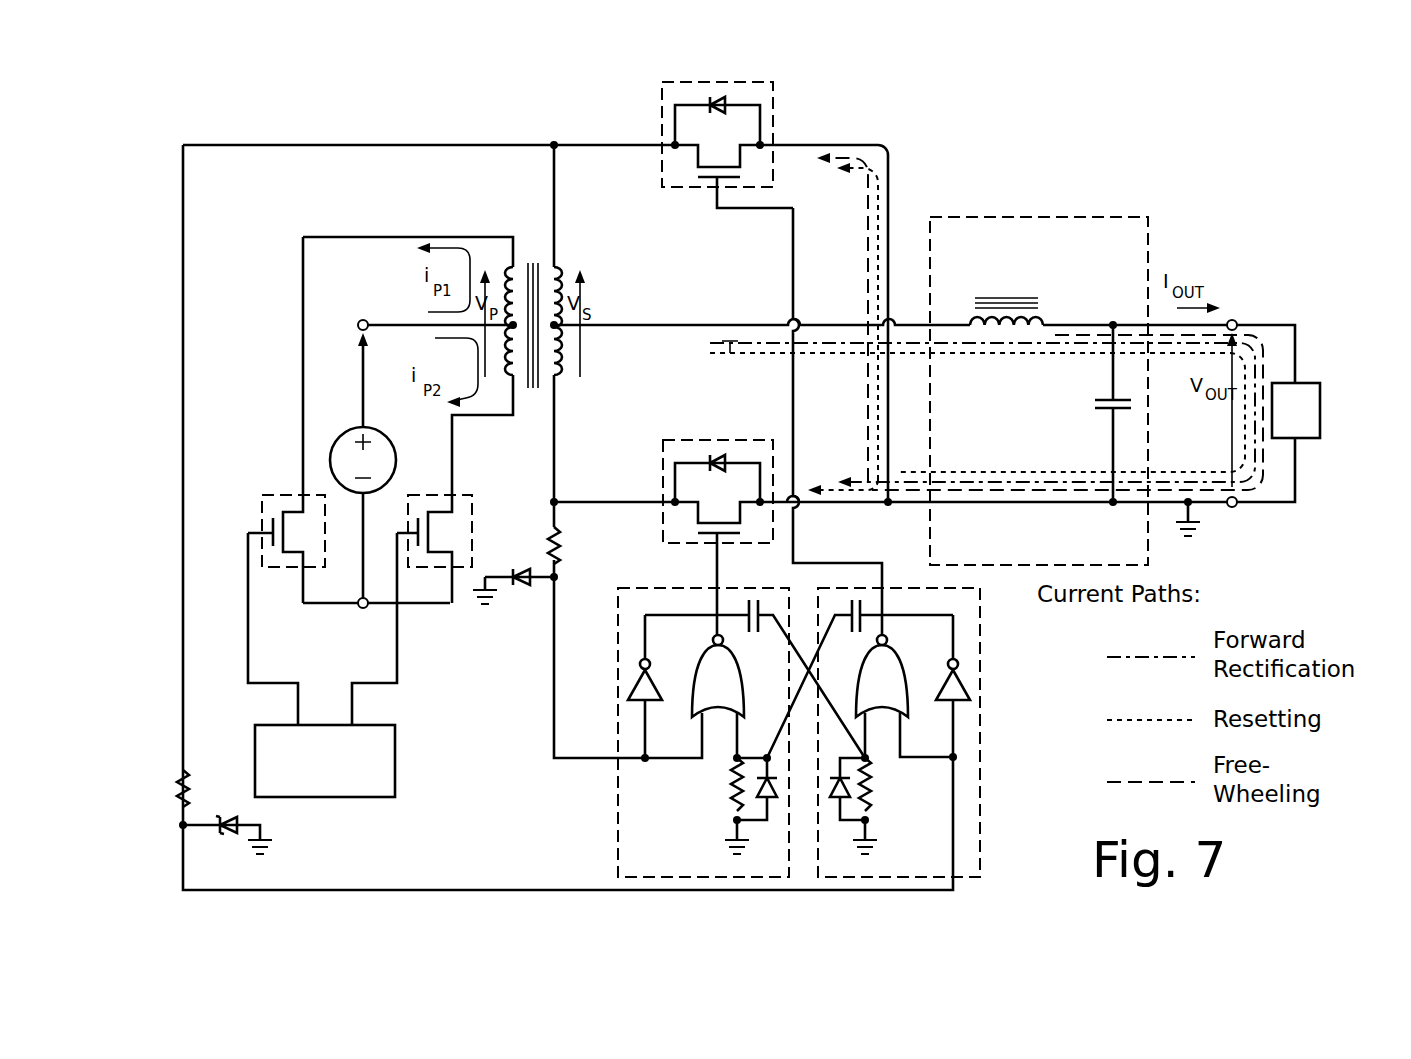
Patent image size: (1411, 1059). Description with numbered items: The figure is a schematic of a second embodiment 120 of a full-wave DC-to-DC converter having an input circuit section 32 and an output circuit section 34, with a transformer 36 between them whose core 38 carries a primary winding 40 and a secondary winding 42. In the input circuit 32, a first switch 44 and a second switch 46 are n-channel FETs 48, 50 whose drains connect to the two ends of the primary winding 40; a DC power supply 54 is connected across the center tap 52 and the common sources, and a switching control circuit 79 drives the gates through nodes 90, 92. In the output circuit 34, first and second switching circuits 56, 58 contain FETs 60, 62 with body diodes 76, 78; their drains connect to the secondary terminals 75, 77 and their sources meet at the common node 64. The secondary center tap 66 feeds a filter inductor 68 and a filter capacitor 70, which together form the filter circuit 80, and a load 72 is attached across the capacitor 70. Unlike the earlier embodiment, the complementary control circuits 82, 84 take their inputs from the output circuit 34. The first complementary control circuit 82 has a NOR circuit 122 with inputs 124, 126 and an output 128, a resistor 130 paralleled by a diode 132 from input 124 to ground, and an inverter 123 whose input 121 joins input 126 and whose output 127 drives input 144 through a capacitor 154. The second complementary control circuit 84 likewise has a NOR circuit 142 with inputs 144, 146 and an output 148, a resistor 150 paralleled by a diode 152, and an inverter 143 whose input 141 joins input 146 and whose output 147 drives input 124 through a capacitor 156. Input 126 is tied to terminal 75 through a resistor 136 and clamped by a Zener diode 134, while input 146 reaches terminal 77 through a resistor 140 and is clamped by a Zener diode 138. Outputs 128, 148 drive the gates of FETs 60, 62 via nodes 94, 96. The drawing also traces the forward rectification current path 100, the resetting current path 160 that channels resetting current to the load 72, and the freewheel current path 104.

The input circuit section 32 is at (517, 90).
The output circuit section 34 is at (555, 70).
The transformer 36 is at (550, 303).
The core 38 is at (533, 390).
The primary winding 40 is at (502, 378).
The secondary winding 42 is at (556, 376).
The first switch 44 is at (295, 521).
The second switch 46 is at (447, 528).
The first FET 48 is at (300, 520).
The second FET 50 is at (450, 520).
The center tap 52 is at (392, 320).
The DC power supply 54 is at (398, 445).
The first switching circuit 56 is at (714, 143).
The second switching circuit 58 is at (709, 512).
The FET 60 is at (688, 158).
The FET 62 is at (705, 548).
The common node 64 is at (915, 505).
The center tap node 66 is at (620, 325).
The filter inductor 68 is at (1020, 295).
The filter capacitor 70 is at (1102, 398).
The load 72 is at (1273, 413).
The secondary winding terminal 75 is at (556, 200).
The body diode 76 is at (727, 103).
The secondary winding terminal 77 is at (556, 445).
The body diode 78 is at (715, 448).
The switching control circuit 79 is at (325, 761).
The filter circuit 80 is at (1039, 359).
The first complementary control circuit 82 is at (906, 733).
The second complementary control circuit 84 is at (706, 733).
The node 90 is at (245, 655).
The node 92 is at (393, 645).
The node 94 is at (793, 548).
The node 96 is at (718, 575).
The current path 100 is at (730, 353).
The freewheel current path 104 is at (865, 278).
The second embodiment 120 is at (1218, 116).
The input 121 is at (955, 715).
The NOR circuit 122 is at (904, 696).
The inverter 123 is at (948, 672).
The input 124 is at (870, 742).
The input 126 is at (900, 722).
The output 127 is at (960, 645).
The output 128 is at (885, 610).
The resistor 130 is at (872, 800).
The diode 132 is at (835, 800).
The Zener diode 134 is at (225, 835).
The resistor 136 is at (215, 762).
The Zener diode 138 is at (520, 590).
The resistor 140 is at (560, 545).
The input 141 is at (640, 737).
The NOR circuit 142 is at (718, 696).
The inverter 143 is at (632, 690).
The input 144 is at (735, 765).
The input 146 is at (700, 735).
The output 147 is at (645, 632).
The output 148 is at (712, 615).
The resistor 150 is at (728, 795).
The diode 152 is at (770, 800).
The capacitor 154 is at (848, 625).
The capacitor 156 is at (760, 625).
The resetting current path 160 is at (880, 178).